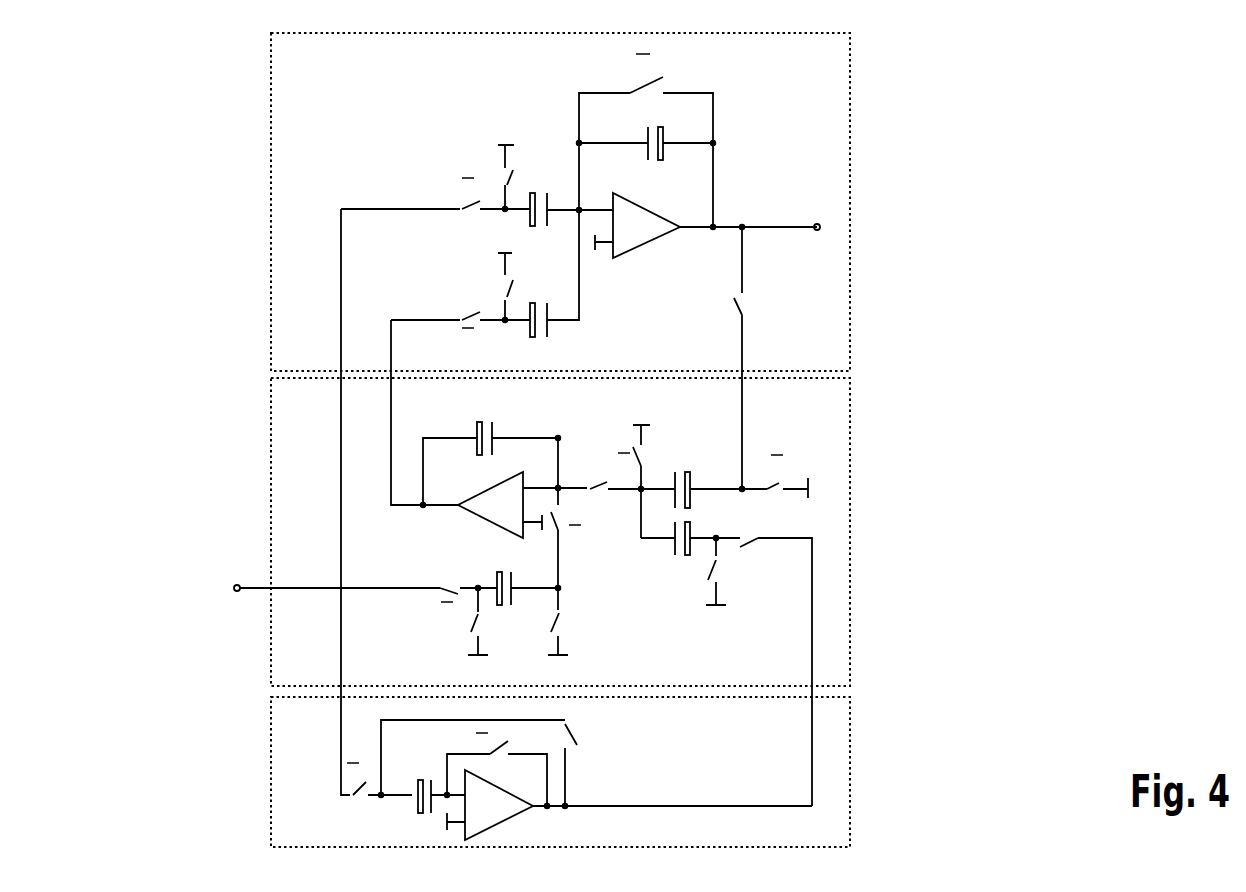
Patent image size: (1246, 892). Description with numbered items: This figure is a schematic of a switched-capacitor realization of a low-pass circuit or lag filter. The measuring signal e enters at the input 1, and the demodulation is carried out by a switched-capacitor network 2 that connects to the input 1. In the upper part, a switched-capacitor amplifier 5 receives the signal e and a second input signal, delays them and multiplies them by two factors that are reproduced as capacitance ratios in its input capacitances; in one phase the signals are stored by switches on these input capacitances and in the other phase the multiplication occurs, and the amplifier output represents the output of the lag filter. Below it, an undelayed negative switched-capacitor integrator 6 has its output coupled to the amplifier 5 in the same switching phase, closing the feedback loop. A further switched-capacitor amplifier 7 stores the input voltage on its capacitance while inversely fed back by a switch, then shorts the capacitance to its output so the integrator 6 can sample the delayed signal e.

The input 1 is at (265, 590).
The switched-capacitor network 2 is at (943, 266).
The switched-capacitor amplifier 5 is at (850, 223).
The switched-capacitor integrator 6 is at (850, 517).
The switched-capacitor amplifier 7 is at (850, 772).